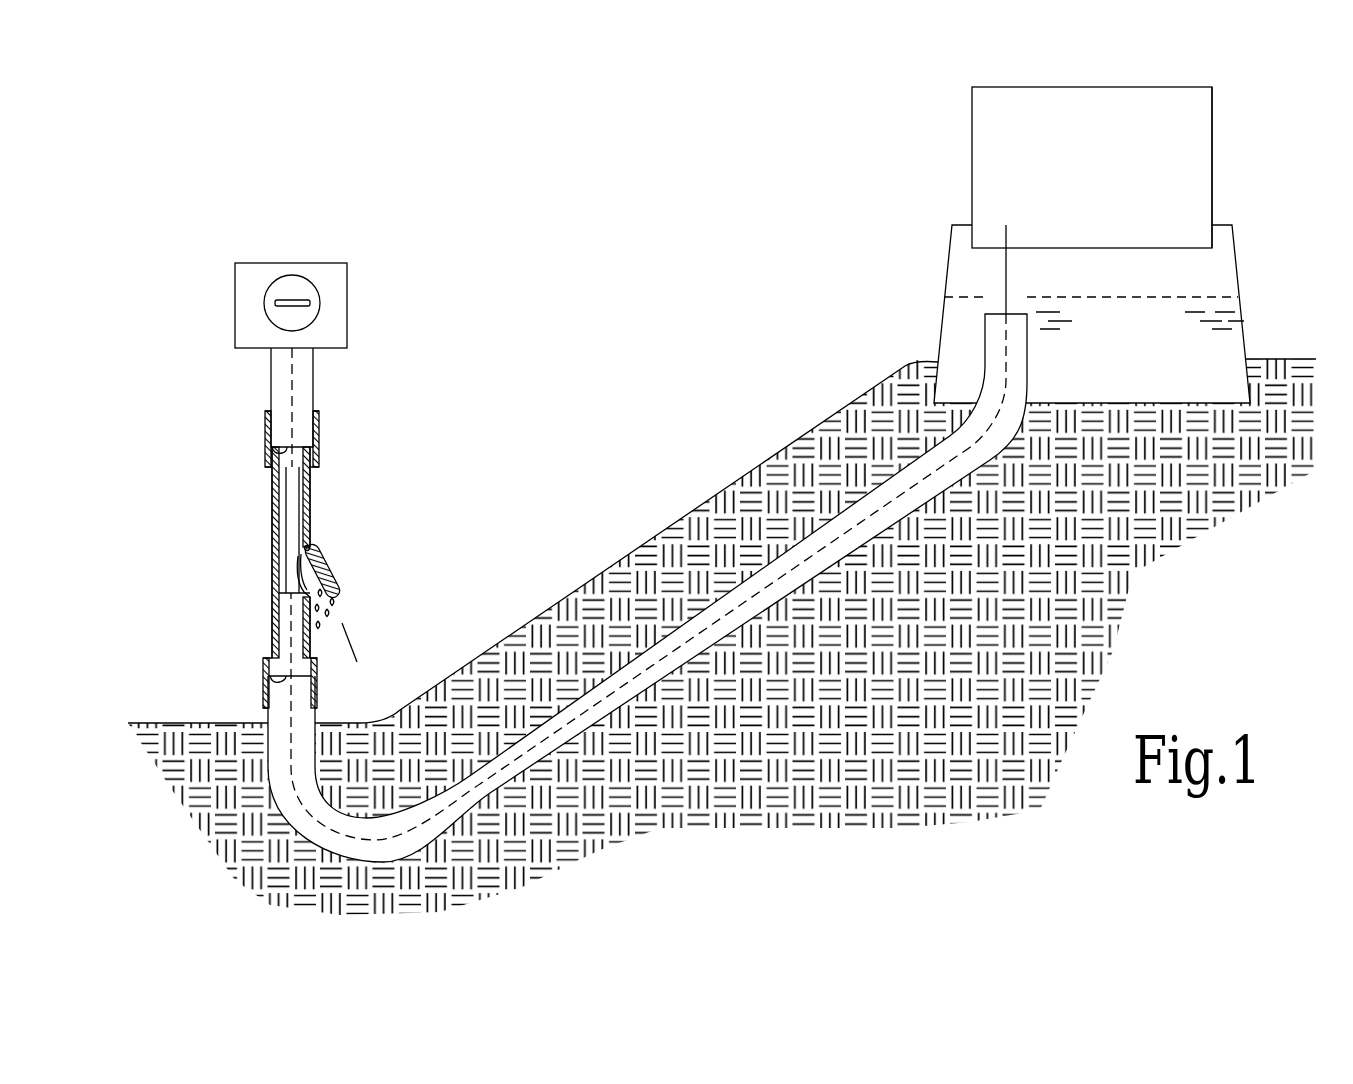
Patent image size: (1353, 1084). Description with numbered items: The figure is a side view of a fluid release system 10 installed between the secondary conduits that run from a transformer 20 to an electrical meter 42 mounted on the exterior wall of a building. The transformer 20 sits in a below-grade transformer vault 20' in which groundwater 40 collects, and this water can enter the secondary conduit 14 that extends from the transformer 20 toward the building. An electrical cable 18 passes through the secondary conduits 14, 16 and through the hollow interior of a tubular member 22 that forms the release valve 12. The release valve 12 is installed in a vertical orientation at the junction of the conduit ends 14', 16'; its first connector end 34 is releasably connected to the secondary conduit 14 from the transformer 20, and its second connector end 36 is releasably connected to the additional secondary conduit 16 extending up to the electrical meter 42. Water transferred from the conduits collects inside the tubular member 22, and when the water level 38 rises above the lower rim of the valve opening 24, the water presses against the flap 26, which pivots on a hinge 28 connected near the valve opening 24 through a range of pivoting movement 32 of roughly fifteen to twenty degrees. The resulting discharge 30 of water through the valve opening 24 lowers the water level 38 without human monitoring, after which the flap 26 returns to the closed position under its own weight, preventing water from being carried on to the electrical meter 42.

The fluid release system 10 is at (543, 425).
The release valve 12 is at (442, 530).
The secondary conduit 14 is at (647, 588).
The conduit end 14' is at (248, 641).
The secondary conduit 16 is at (251, 397).
The conduit end 16' is at (247, 439).
The electrical cable 18 is at (1006, 337).
The transformer 20 is at (1092, 167).
The transformer vault 20' is at (1140, 327).
The tubular member 22 is at (272, 505).
The valve opening 24 is at (333, 583).
The flap 26 is at (333, 575).
The hinge 28 is at (308, 546).
The discharge 30 is at (327, 613).
The range of pivoting movement 32 is at (312, 642).
The first connector end 34 is at (267, 678).
The second connector end 36 is at (319, 432).
The water level 38 is at (285, 588).
The groundwater 40 is at (1193, 293).
The electrical meter 42 is at (336, 303).